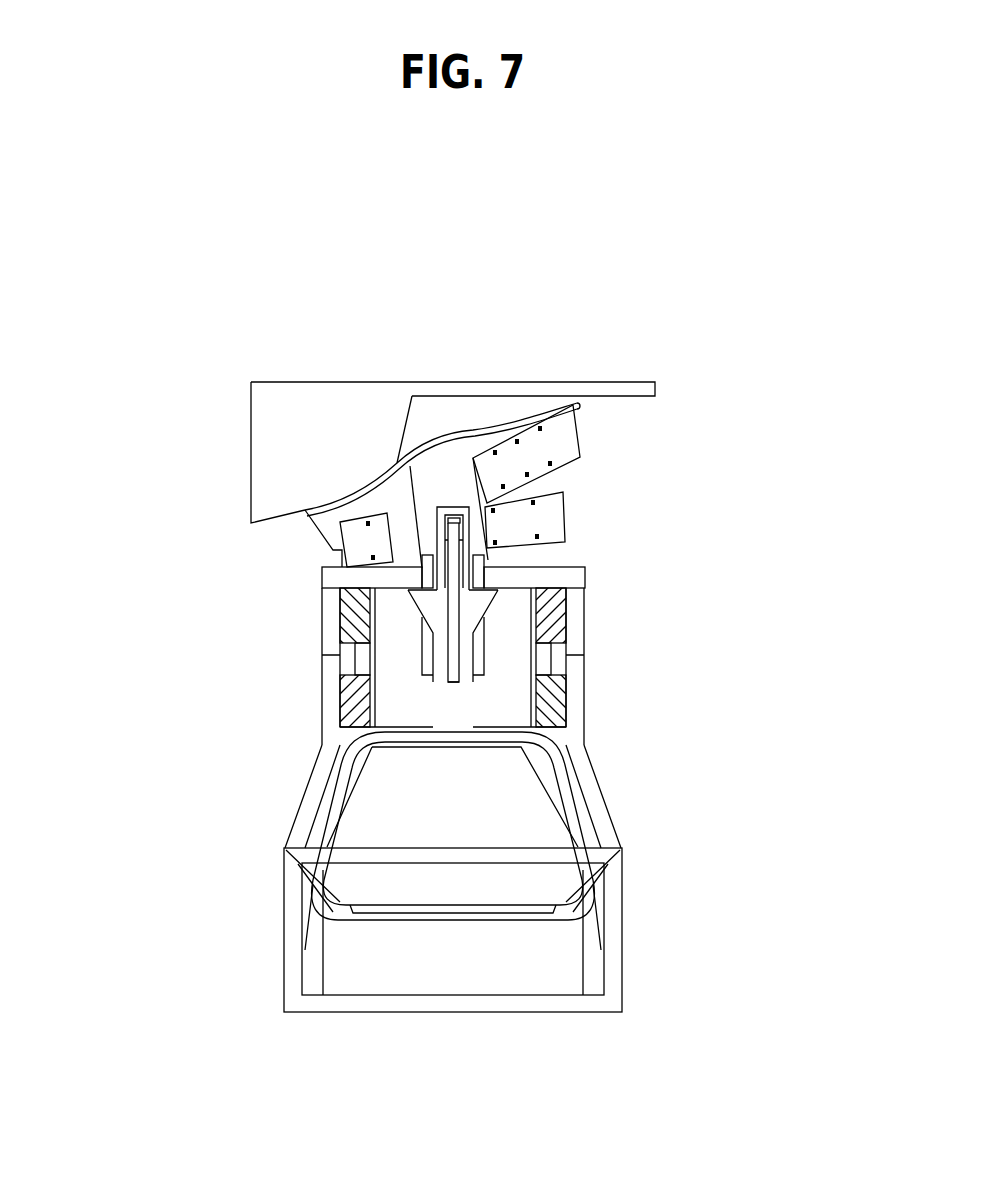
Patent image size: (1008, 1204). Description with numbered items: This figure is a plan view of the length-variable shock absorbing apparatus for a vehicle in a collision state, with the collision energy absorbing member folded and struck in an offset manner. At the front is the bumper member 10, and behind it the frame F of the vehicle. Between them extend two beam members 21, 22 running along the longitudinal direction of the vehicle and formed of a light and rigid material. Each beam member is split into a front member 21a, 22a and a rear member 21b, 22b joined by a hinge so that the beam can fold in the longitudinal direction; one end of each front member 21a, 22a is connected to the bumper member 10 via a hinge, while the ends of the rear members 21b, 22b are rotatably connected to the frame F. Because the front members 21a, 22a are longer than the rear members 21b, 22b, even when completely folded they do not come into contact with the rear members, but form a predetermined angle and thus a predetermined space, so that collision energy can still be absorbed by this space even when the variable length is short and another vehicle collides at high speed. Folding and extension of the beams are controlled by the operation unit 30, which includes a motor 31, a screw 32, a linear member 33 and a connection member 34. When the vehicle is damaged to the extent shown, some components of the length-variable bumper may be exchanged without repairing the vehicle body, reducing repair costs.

The bumper member 10 is at (467, 428).
The front member 22a is at (577, 437).
The rear member 22b is at (566, 517).
The beam member 22 is at (772, 432).
The front member 21a is at (333, 528).
The rear member 21b is at (345, 601).
The beam member 21 is at (105, 575).
The frame F is at (348, 660).
The motor 31 is at (455, 522).
The screw 32 is at (453, 558).
The connection member 34 is at (478, 650).
The linear member 33 is at (457, 682).
The operation unit 30 is at (760, 625).